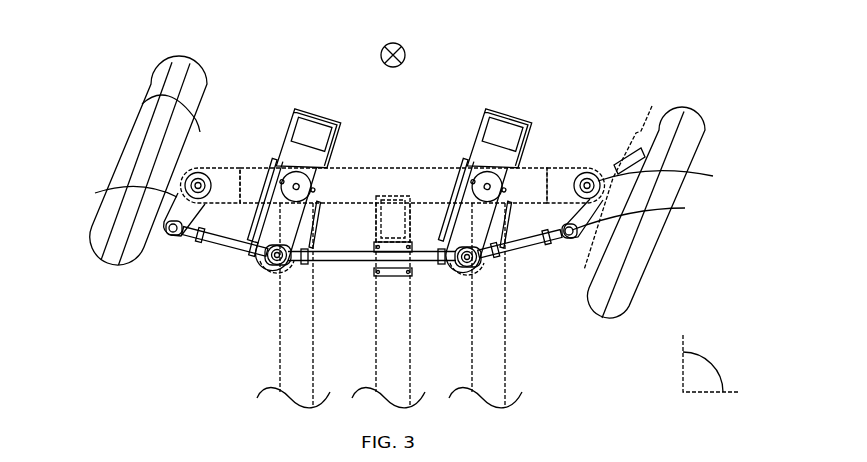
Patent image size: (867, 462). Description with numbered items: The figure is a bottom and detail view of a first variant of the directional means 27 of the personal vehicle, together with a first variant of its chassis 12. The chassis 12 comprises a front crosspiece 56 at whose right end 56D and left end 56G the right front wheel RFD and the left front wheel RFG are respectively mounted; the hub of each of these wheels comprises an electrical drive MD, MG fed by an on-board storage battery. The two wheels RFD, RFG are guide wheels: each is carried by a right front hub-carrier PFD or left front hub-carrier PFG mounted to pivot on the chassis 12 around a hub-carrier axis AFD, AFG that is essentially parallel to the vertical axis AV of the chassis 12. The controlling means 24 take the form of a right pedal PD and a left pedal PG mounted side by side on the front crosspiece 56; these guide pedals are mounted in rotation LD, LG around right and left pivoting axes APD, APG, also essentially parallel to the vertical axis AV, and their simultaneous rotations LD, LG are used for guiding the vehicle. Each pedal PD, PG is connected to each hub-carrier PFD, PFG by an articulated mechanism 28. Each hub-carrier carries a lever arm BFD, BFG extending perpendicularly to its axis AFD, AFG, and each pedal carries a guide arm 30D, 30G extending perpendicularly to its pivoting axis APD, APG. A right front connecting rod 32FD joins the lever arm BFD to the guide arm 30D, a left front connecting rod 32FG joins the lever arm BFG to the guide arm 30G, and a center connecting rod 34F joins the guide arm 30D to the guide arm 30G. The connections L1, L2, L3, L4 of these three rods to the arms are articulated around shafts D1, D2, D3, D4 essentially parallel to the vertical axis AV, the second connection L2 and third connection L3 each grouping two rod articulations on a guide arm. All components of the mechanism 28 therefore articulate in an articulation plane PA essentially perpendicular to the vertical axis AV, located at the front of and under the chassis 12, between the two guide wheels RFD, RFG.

The chassis 12 is at (215, 362).
The controlling means 24 is at (532, 292).
The directional means 27 is at (283, 52).
The articulated mechanism 28 is at (437, 336).
The guide arm of the right pedal 30D is at (292, 212).
The guide arm of the left pedal 30G is at (482, 213).
The right front connecting rod 32FD is at (215, 246).
The left front connecting rod 32FG is at (538, 252).
The center connecting rod 34F is at (345, 262).
The front crosspiece 56 is at (430, 178).
The right end of the front crosspiece 56D is at (246, 140).
The left end of the front crosspiece 56G is at (584, 150).
The right hub-carrier axis AFD is at (176, 160).
The left hub-carrier axis AFG is at (672, 177).
The right pivoting axis APD is at (301, 188).
The left pivoting axis APG is at (492, 188).
The vertical axis AV is at (393, 46).
The lever arm of the right front hub-carrier BFD is at (166, 218).
The lever arm of the left front hub-carrier BFG is at (583, 242).
The shaft D1 is at (170, 237).
The shaft D2 is at (268, 268).
The shaft D3 is at (466, 272).
The shaft D4 is at (586, 238).
The first connection L1 is at (176, 240).
The second connection L2 is at (273, 272).
The third connection L3 is at (475, 270).
The fourth connection L4 is at (575, 246).
The rotation of the right pedal LD is at (302, 70).
The rotation of the left pedal LG is at (502, 86).
The electrical drive of the right front wheel MD is at (193, 130).
The electrical drive of the left front wheel MG is at (634, 205).
The articulation plane PA is at (711, 363).
The right pedal PD is at (330, 108).
The left pedal PG is at (512, 108).
The right front hub-carrier PFD is at (168, 178).
The left front hub-carrier PFG is at (645, 214).
The right front wheel RFD is at (170, 72).
The left front wheel RFG is at (703, 132).